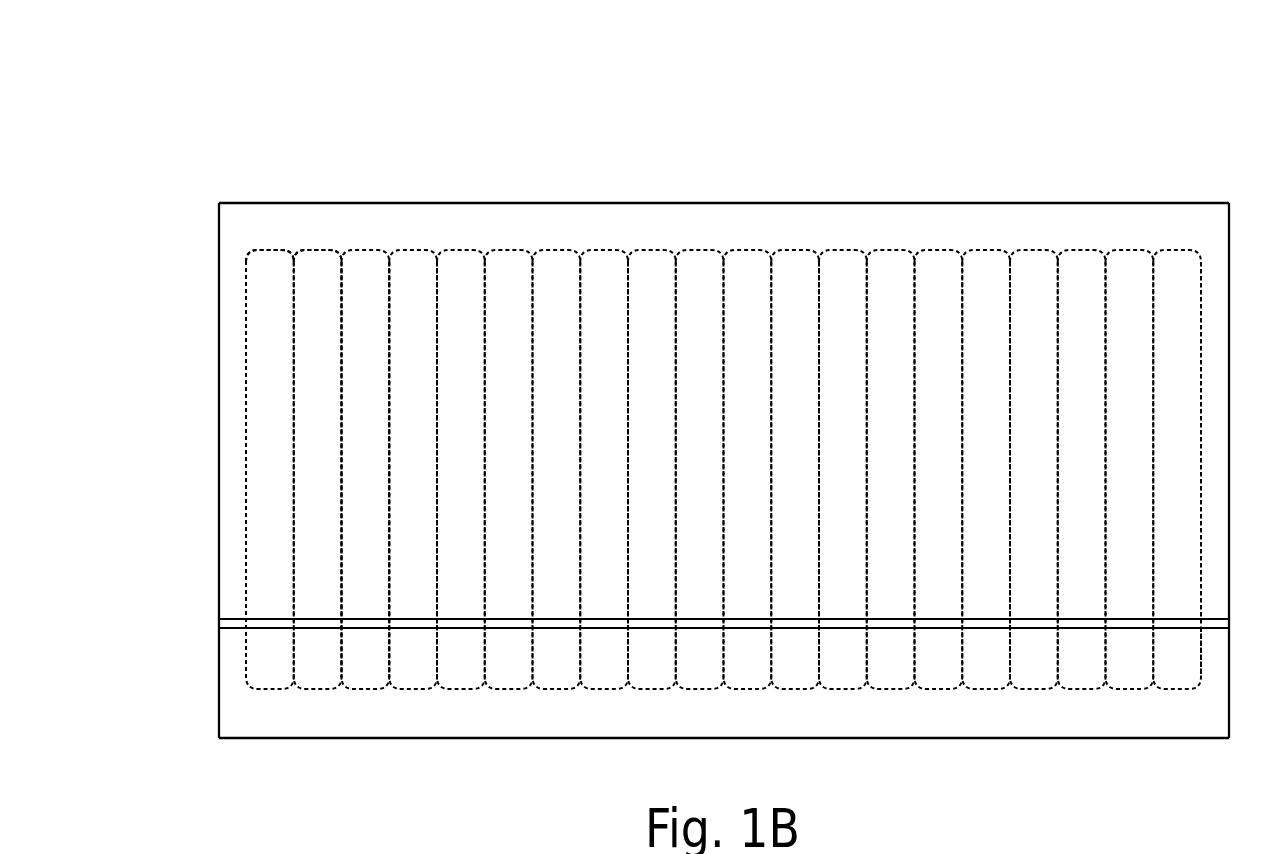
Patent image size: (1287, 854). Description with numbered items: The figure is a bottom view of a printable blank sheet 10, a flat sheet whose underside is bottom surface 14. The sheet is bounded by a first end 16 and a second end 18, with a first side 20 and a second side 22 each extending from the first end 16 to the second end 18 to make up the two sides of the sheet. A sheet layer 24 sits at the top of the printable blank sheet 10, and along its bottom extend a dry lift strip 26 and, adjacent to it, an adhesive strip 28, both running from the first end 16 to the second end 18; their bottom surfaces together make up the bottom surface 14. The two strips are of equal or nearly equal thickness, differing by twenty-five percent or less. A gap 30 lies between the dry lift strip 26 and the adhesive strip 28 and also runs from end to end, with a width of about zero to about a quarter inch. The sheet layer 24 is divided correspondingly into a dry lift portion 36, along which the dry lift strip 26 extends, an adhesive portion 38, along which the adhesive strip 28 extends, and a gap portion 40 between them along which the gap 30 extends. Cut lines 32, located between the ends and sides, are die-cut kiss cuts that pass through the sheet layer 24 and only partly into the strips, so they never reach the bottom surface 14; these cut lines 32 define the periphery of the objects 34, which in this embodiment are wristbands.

The printable blank sheet 10 is at (261, 104).
The bottom surface 14 is at (570, 312).
The first end 16 is at (219, 343).
The second end 18 is at (1229, 390).
The first side 20 is at (493, 738).
The second side 22 is at (847, 202).
The sheet layer 24 is at (603, 624).
The dry lift strip 26 is at (206, 438).
The adhesive strip 28 is at (208, 691).
The gap 30 is at (231, 622).
The cut lines 32 is at (390, 318).
The objects 34 is at (313, 262).
The dry lift portion 36 is at (1213, 278).
The adhesive portion 38 is at (1200, 706).
The gap portion 40 is at (1218, 623).